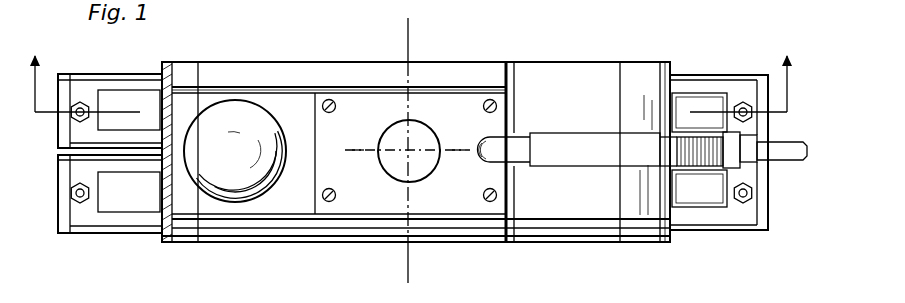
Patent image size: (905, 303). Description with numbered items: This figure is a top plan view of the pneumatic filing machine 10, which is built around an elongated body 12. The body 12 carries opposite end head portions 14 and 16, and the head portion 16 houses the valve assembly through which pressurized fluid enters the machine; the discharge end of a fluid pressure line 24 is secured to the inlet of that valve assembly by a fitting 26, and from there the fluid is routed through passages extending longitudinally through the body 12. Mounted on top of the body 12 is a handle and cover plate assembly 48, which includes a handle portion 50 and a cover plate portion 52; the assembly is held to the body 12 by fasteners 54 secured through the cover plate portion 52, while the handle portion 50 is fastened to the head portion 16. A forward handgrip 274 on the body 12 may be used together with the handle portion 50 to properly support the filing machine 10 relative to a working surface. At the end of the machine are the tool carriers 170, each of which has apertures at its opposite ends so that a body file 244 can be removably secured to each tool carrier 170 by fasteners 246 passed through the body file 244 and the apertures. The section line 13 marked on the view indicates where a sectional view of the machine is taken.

The filing machine 10 is at (335, 60).
The elongated body 12 is at (552, 42).
The section line 13- 13 is at (412, 30).
The head portion 14 is at (189, 60).
The head portion 16 is at (638, 60).
The fluid pressure line 24 is at (784, 173).
The fitting 26 is at (770, 159).
The handle and cover plate assembly 48 is at (516, 134).
The handle portion 50 is at (572, 131).
The cover plate portion 52 is at (339, 79).
The fasteners 54 is at (395, 155).
The tool carriers 170 is at (733, 232).
The body file 244 is at (765, 232).
The fasteners 246 is at (748, 193).
The forward handgrip 274 is at (268, 127).